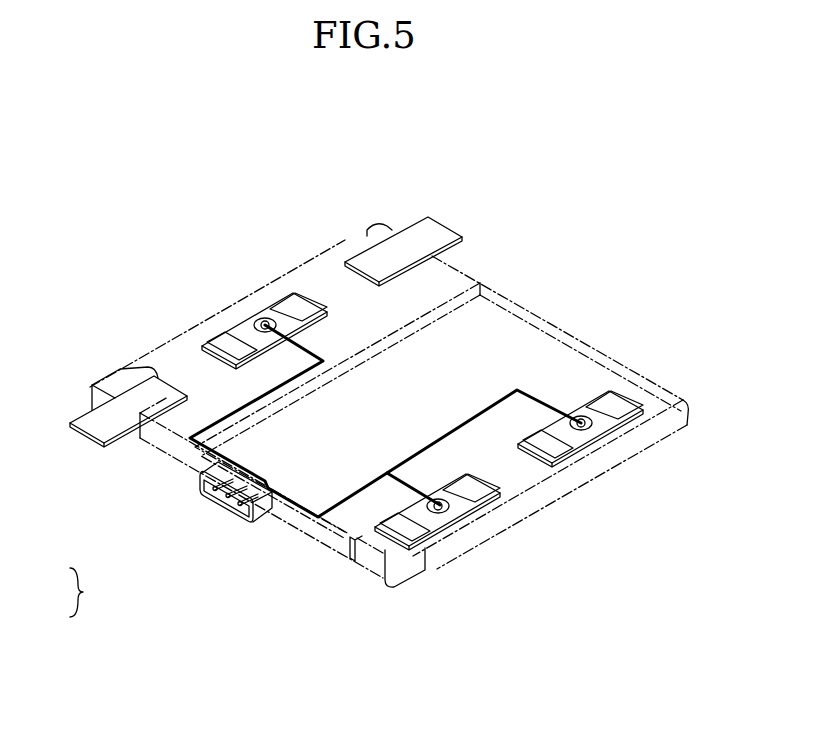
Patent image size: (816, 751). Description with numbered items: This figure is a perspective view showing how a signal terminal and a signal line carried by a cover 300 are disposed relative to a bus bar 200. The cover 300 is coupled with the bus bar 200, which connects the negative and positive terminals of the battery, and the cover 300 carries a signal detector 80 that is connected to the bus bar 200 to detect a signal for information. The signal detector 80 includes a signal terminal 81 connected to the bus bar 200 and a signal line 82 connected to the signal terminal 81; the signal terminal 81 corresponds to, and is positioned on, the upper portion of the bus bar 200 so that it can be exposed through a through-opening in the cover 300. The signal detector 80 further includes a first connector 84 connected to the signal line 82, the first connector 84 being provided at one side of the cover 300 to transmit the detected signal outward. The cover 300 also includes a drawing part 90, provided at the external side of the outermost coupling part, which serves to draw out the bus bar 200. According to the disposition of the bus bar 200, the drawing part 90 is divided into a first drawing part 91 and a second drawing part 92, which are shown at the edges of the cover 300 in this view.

The signal detector 80 is at (227, 317).
The signal terminal 81 is at (262, 322).
The signal line 82 is at (300, 354).
The first connector 84 is at (216, 511).
The drawing part 90 is at (81, 592).
The first drawing part 91 is at (143, 384).
The second drawing part 92 is at (373, 550).
The bus bar 200 is at (104, 431).
The cover 300 is at (600, 352).